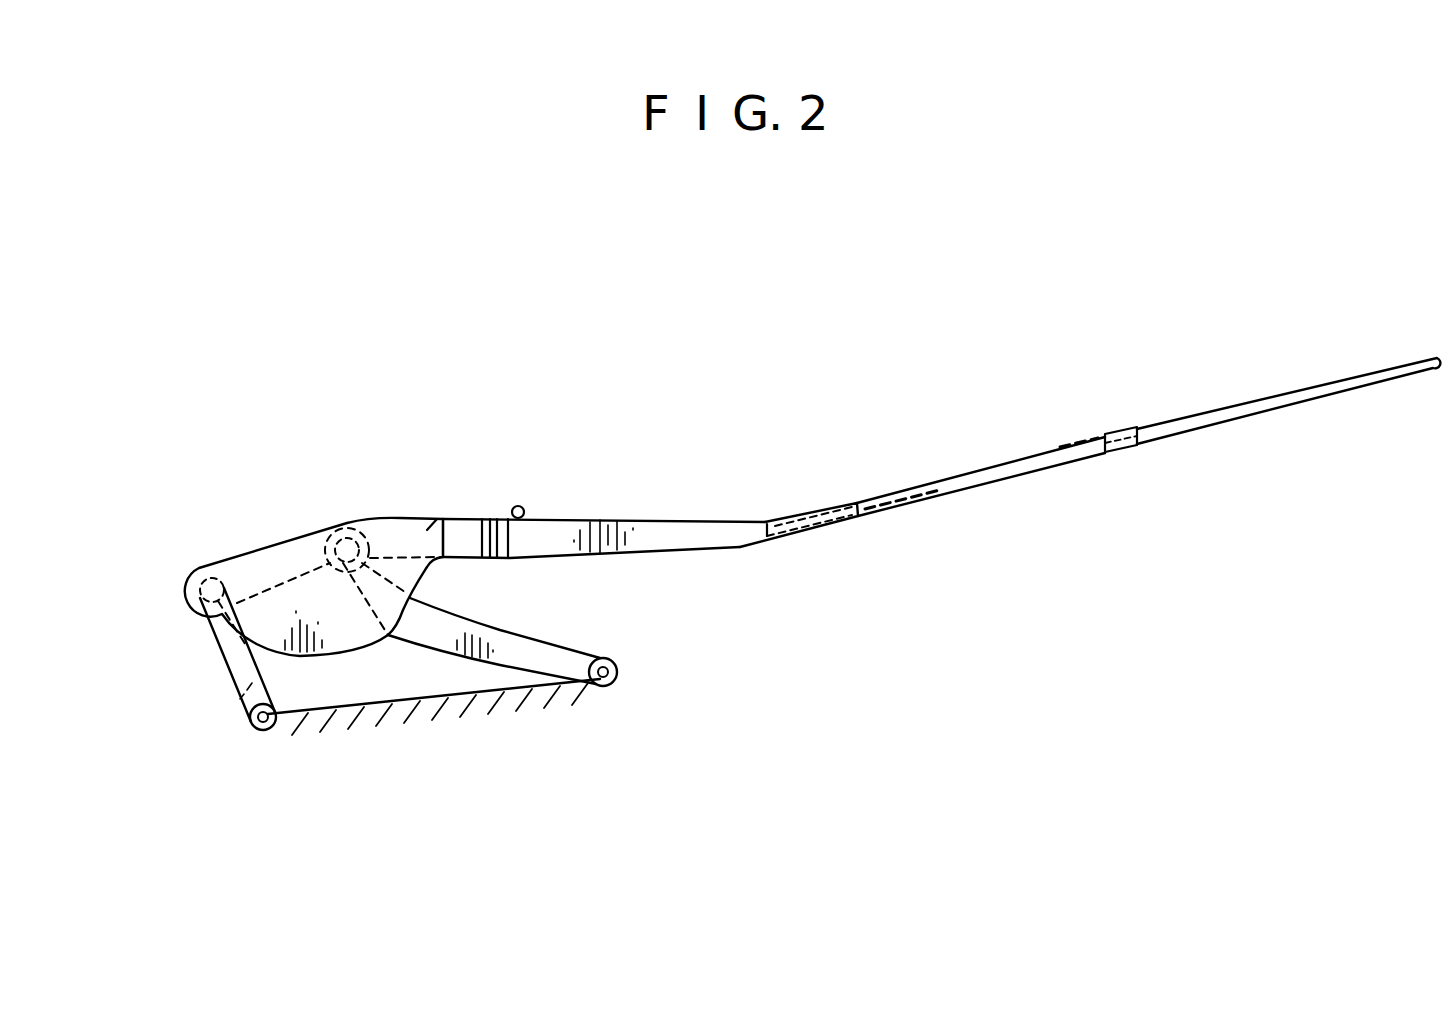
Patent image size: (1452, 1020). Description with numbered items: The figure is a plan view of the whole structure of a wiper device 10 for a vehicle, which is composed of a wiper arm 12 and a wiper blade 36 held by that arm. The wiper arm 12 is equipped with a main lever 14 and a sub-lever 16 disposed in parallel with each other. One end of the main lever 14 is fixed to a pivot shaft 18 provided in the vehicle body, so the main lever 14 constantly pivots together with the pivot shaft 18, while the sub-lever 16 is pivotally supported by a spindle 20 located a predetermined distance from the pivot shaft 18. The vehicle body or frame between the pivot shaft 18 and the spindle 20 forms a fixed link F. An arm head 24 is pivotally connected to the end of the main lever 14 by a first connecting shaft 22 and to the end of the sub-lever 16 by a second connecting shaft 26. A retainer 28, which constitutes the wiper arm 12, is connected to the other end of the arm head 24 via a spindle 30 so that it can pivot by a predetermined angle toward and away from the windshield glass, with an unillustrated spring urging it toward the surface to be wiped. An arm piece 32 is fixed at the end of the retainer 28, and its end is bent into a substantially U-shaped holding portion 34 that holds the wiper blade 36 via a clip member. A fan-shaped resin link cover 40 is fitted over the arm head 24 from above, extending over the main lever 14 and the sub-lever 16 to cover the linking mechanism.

The wiper device 10 is at (683, 362).
The wiper arm 12 is at (608, 410).
The main lever 14 is at (230, 688).
The sub-lever 16 is at (530, 681).
The pivot shaft 18 is at (255, 729).
The spindle 20 is at (617, 670).
The connecting shaft 22 is at (215, 577).
The arm head 24 is at (440, 513).
The connecting shaft 26 is at (349, 538).
The retainer 28 is at (682, 520).
The spindle 30 is at (497, 558).
The arm piece 32 is at (970, 472).
The holding portion 34 is at (1122, 448).
The wiper blade 36 is at (1250, 400).
The link cover 40 is at (347, 662).
The fixed link F is at (441, 694).